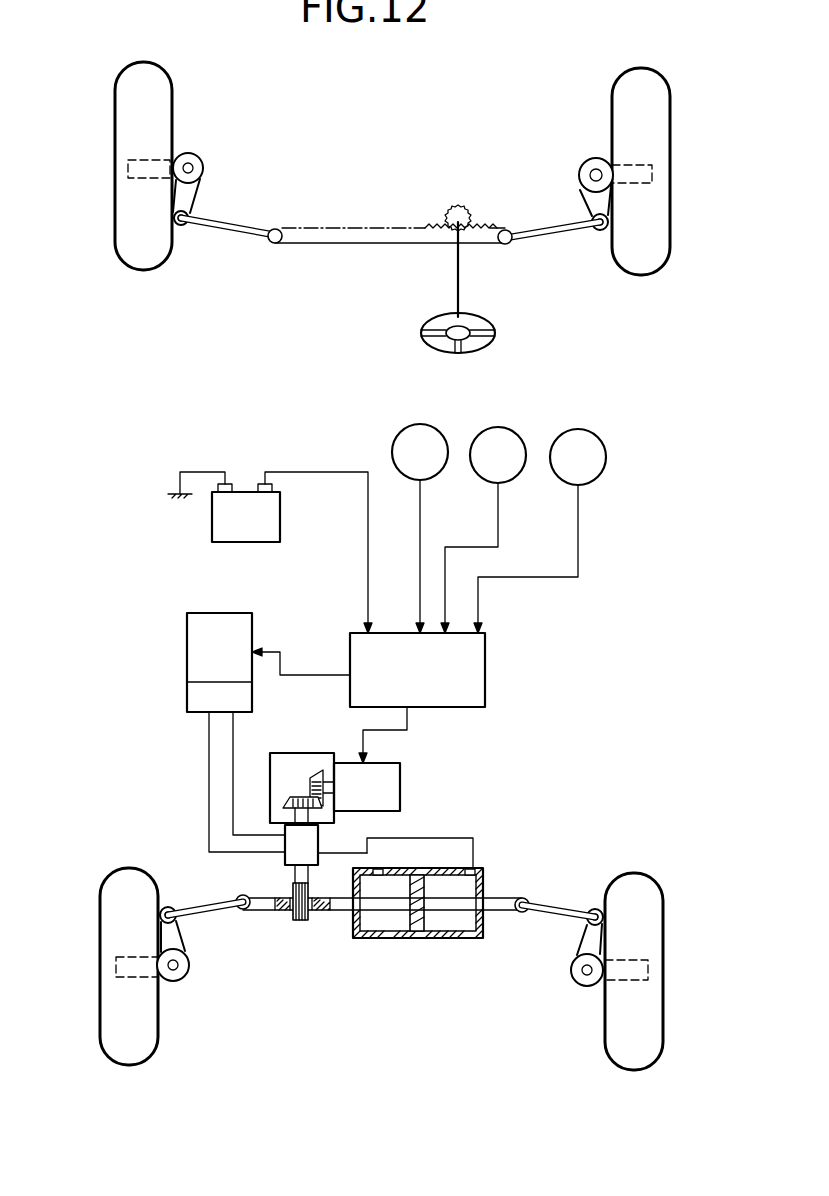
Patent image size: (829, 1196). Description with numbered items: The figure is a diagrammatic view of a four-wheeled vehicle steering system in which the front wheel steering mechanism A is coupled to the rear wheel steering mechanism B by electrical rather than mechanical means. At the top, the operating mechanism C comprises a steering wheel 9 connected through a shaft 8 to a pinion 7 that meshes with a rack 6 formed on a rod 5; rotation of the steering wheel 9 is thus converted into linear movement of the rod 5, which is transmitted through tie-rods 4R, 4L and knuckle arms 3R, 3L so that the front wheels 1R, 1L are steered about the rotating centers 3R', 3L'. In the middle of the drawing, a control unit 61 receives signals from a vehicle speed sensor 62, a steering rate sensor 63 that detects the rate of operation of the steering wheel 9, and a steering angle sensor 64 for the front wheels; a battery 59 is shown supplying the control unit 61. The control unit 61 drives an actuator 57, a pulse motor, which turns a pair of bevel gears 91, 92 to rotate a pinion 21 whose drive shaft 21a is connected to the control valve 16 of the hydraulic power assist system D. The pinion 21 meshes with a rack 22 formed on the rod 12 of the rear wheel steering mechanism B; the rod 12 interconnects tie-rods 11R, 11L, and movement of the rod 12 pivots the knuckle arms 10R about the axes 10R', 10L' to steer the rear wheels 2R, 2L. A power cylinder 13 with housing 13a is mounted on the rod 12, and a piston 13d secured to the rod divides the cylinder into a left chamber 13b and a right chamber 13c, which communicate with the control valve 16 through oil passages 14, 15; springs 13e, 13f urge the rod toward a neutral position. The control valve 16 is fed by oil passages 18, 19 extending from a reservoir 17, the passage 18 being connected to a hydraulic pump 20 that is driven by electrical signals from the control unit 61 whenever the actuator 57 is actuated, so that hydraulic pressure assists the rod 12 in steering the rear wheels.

The front wheel 1L is at (122, 110).
The front wheel 1R is at (664, 135).
The knuckle arm 3L is at (214, 189).
The rotating center 3L' is at (213, 137).
The knuckle arm 3R is at (565, 194).
The rotating center 3R' is at (571, 148).
The tie-rod 4L is at (230, 238).
The tie-rod 4R is at (556, 242).
The rod 5 is at (348, 244).
The rack 6 is at (440, 226).
The pinion 7 is at (462, 208).
The shaft 8 is at (460, 288).
The steering wheel 9 is at (490, 346).
The front wheel steering mechanism A is at (312, 211).
The operating mechanism C is at (446, 284).
The vehicle speed sensor 62 is at (412, 430).
The steering rate sensor 63 is at (495, 432).
The steering angle sensor 64 is at (583, 432).
The battery 59 is at (268, 542).
The control unit 61 is at (486, 676).
The hydraulic pump 20 is at (190, 628).
The reservoir 17 is at (190, 692).
The oil passage 18 is at (207, 746).
The oil passage 19 is at (236, 748).
The actuator 57 is at (401, 778).
The bevel gear 92 is at (318, 770).
The bevel gear 91 is at (300, 796).
The control valve 16 is at (286, 838).
The oil passage 15 is at (366, 846).
The oil passage 14 is at (450, 838).
The power cylinder 13 is at (498, 878).
The cylinder housing 13a is at (358, 940).
The left chamber 13b is at (390, 937).
The right chamber 13c is at (452, 937).
The piston 13d is at (430, 937).
The spring 13e is at (378, 872).
The spring 13f is at (472, 874).
The hydraulic power assist system D is at (417, 938).
The rod 12 is at (340, 912).
The rack 22 is at (282, 912).
The pinion 21 is at (302, 922).
The drive shaft 21a is at (294, 876).
The rear wheel steering mechanism B is at (224, 912).
The rear wheel 2L is at (102, 1040).
The rear wheel 2R is at (660, 1046).
The knuckle arm 10R is at (380, 972).
The axis 10L' is at (197, 1014).
The axis 10R' is at (571, 1007).
The tie-rod 11L is at (206, 904).
The tie-rod 11R is at (558, 908).